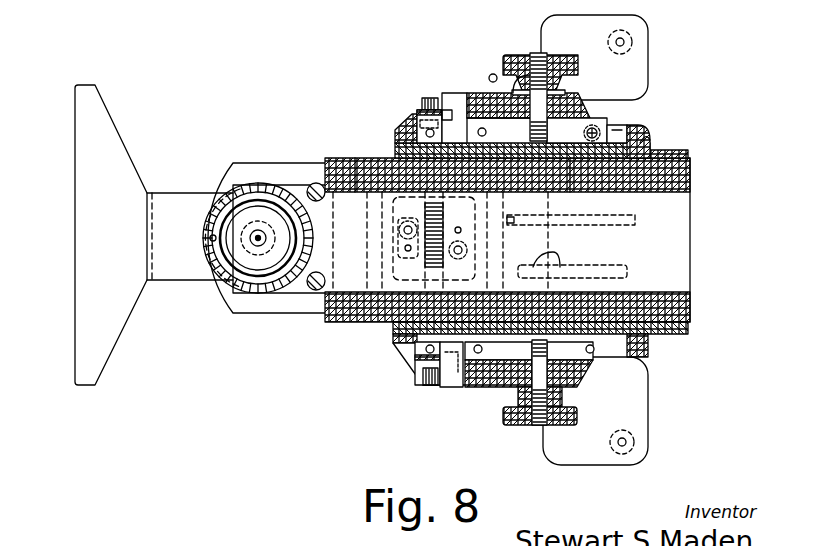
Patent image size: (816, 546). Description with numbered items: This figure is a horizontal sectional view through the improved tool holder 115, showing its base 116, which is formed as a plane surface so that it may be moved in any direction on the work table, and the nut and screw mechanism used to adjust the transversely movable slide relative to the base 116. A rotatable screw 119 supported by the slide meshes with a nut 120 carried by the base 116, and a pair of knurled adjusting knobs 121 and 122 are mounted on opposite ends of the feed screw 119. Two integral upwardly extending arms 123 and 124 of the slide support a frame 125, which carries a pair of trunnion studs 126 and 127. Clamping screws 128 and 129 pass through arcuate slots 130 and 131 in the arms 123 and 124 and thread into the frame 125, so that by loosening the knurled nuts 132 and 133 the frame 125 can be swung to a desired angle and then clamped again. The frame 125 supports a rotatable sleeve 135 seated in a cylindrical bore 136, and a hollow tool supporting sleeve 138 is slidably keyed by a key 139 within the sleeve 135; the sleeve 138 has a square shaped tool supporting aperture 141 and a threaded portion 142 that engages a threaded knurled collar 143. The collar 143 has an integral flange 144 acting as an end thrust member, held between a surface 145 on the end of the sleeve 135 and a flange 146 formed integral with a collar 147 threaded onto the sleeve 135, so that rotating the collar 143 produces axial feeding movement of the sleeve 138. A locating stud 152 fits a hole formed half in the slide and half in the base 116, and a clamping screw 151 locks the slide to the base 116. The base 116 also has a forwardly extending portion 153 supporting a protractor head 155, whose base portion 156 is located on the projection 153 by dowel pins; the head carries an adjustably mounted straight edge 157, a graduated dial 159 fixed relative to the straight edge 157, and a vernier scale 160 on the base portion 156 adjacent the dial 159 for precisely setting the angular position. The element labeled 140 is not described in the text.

The tool holder 115 is at (394, 120).
The base 116 is at (548, 456).
The rotatable screw 119 is at (434, 237).
The nut 120 is at (420, 258).
The knurled adjusting knob 121 is at (433, 98).
The knurled adjusting knob 122 is at (448, 389).
The upwardly extending arm 123 is at (472, 93).
The upwardly extending arm 124 is at (490, 388).
The frame 125 is at (573, 128).
The trunnion stud 126 is at (450, 100).
The trunnion stud 127 is at (442, 388).
The clamping screw 128 is at (538, 55).
The clamping screw 129 is at (534, 425).
The arcuate slot 130 is at (520, 107).
The arcuate slot 131 is at (580, 383).
The knurled nut 132 is at (503, 56).
The knurled nut 133 is at (507, 418).
The rotatable sleeve 135 is at (392, 142).
The cylindrical bore 136 is at (400, 127).
The hollow tool supporting sleeve 138 is at (328, 157).
The key 139 is at (613, 288).
The housing end wall 140 is at (568, 192).
The square shaped tool supporting aperture 141 is at (355, 183).
The threaded portion 142 is at (690, 165).
The threaded knurled collar 143 is at (684, 152).
The integral flange 144 is at (640, 128).
The surface 145 is at (597, 138).
The flange 146 is at (650, 142).
The collar 147 is at (645, 126).
The clamping screw 151 is at (635, 222).
The locating stud 152 is at (530, 268).
The forwardly extending portion 153 is at (295, 313).
The protractor head 155 is at (246, 177).
The base portion 156 is at (297, 184).
The straight edge 157 is at (75, 166).
The graduated dial 159 is at (260, 182).
The vernier scale 160 is at (318, 303).